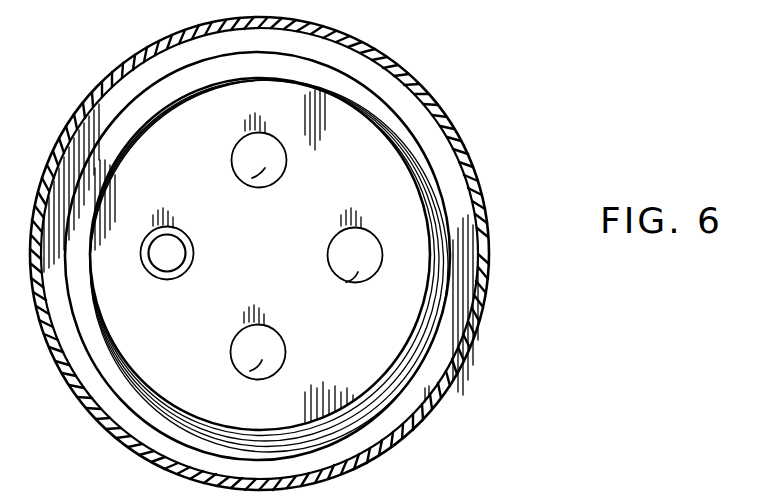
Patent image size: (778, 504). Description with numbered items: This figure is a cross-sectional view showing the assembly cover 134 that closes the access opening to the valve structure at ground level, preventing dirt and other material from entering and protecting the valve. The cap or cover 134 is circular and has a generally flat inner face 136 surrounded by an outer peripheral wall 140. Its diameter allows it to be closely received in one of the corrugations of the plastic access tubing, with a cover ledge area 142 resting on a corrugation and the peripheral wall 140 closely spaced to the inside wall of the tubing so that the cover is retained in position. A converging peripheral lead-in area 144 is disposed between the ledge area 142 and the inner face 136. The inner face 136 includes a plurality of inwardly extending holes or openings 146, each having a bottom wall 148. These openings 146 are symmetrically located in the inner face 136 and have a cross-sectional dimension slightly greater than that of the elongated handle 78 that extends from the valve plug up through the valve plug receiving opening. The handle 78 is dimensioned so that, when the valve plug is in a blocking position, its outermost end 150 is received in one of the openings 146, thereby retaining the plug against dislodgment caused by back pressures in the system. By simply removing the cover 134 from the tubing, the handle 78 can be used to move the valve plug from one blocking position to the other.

The cap or cover 134 is at (492, 315).
The outer peripheral wall 140 is at (476, 174).
The cover ledge area 142 is at (466, 267).
The converging peripheral lead-in area 144 is at (444, 246).
The inner face 136 is at (283, 248).
The inwardly extending holes or openings 146 is at (289, 151).
The bottom wall 148 is at (265, 168).
The outermost end 150 is at (188, 265).
The elongated handle 78 is at (181, 279).